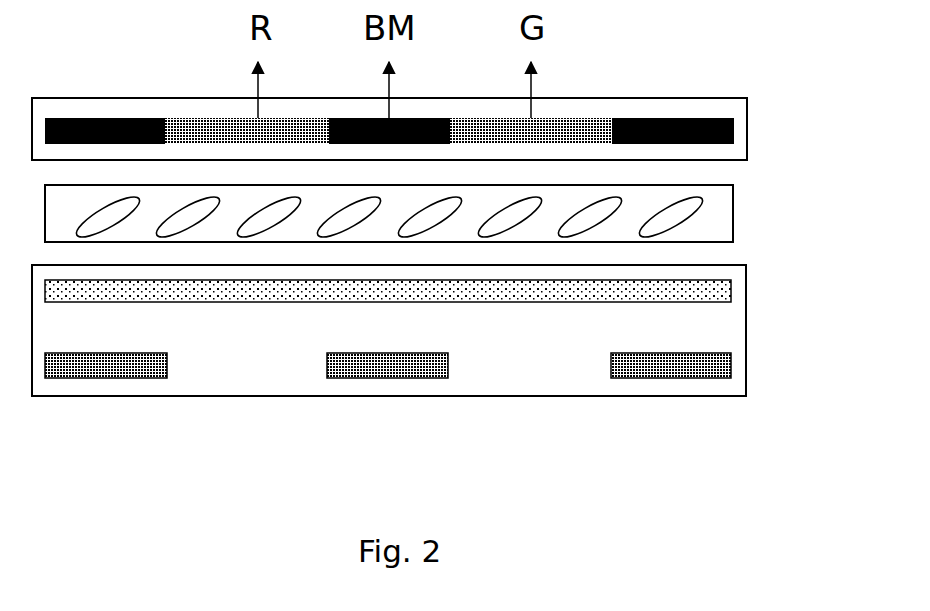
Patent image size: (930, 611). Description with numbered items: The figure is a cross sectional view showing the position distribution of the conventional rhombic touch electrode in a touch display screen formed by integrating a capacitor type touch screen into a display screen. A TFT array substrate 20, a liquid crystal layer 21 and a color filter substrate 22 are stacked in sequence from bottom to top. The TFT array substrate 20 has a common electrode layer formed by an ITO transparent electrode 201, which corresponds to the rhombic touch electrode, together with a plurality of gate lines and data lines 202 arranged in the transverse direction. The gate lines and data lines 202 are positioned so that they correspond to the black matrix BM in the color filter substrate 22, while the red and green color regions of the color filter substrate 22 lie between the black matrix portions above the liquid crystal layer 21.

The color filter substrate 22 is at (748, 128).
The liquid crystal layer 21 is at (698, 208).
The TFT array substrate 20 is at (435, 359).
The ITO transparent electrode 201 is at (697, 290).
The gate lines and data lines 202 is at (697, 363).